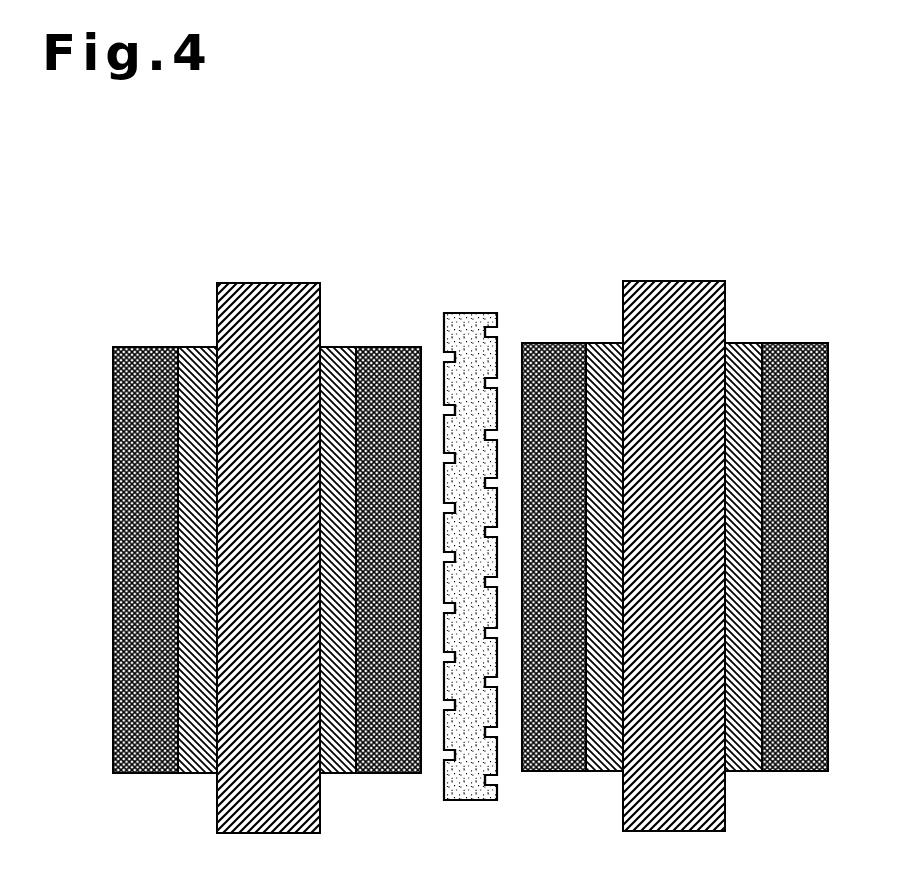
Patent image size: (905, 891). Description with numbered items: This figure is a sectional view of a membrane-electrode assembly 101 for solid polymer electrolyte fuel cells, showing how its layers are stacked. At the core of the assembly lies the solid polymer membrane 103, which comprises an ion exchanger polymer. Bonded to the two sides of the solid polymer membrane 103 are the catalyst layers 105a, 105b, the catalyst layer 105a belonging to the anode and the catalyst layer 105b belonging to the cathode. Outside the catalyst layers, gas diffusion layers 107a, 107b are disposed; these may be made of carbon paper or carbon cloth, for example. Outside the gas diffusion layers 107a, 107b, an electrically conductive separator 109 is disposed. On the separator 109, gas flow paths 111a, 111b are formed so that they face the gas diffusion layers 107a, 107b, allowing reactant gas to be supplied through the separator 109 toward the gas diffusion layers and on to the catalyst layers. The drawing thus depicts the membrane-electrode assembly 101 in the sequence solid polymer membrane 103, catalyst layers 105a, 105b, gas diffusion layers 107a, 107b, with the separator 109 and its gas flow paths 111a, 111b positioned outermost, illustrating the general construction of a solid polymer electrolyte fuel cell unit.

The membrane-electrode assembly 101 is at (266, 283).
The solid polymer membrane 103 is at (217, 308).
The anode catalyst layer 105a is at (194, 347).
The cathode catalyst layer 105b is at (338, 347).
The gas diffusion layer 107a is at (118, 347).
The gas diffusion layer 107b is at (386, 347).
The separator 109 is at (470, 313).
The gas flow path 111a is at (488, 331).
The gas flow path 111b is at (450, 357).